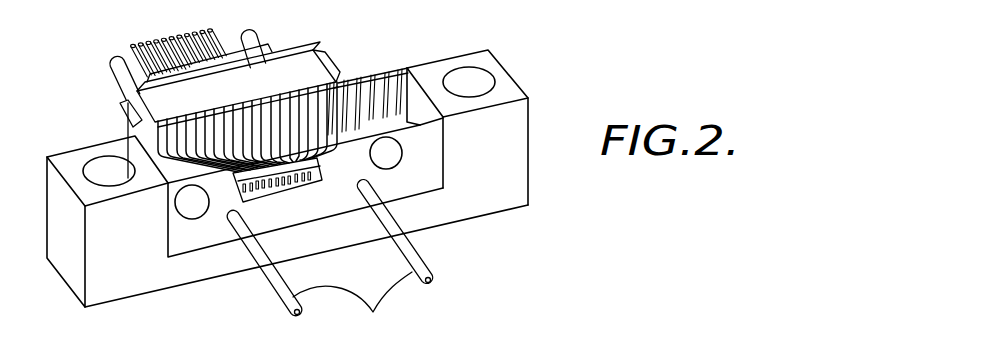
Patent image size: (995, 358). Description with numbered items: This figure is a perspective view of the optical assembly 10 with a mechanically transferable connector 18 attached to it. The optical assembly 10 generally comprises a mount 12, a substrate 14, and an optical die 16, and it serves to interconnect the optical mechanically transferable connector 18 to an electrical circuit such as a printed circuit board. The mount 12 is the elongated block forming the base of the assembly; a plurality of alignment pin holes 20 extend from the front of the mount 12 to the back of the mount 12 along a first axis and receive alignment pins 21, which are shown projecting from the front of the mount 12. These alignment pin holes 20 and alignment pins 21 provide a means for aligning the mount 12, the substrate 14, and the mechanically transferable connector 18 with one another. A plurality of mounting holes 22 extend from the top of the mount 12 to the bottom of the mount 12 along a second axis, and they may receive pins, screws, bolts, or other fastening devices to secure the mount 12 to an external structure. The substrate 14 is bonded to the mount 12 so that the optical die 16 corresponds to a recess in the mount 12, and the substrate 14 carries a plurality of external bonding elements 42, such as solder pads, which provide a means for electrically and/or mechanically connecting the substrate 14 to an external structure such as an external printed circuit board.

The optical assembly 10 is at (552, 104).
The mount 12 is at (505, 177).
The substrate 14 is at (396, 60).
The optical die 16 is at (300, 176).
The mechanically transferable connector 18 is at (296, 62).
The alignment pin holes 20 is at (388, 184).
The alignment pins 21 is at (352, 308).
The mounting holes 22 is at (476, 82).
The external bonding elements 42 is at (362, 90).